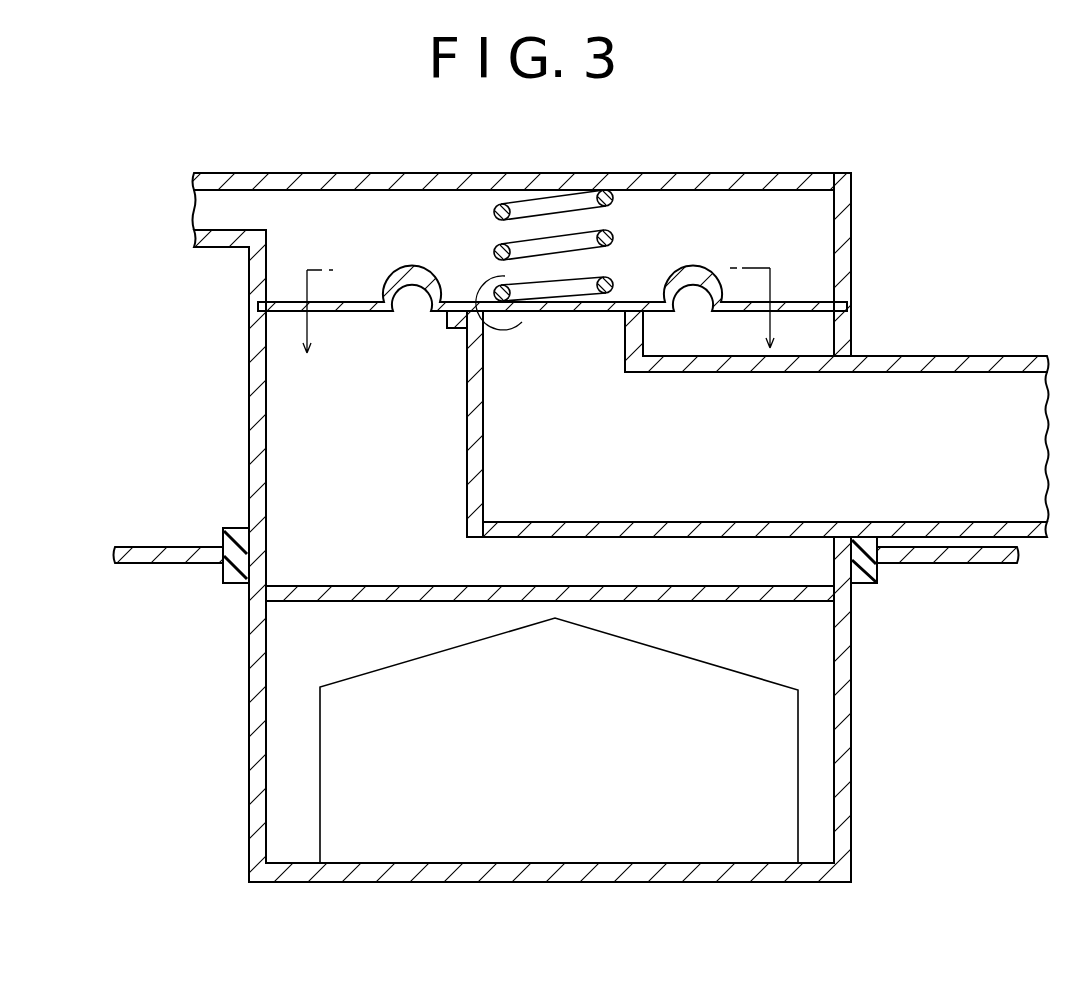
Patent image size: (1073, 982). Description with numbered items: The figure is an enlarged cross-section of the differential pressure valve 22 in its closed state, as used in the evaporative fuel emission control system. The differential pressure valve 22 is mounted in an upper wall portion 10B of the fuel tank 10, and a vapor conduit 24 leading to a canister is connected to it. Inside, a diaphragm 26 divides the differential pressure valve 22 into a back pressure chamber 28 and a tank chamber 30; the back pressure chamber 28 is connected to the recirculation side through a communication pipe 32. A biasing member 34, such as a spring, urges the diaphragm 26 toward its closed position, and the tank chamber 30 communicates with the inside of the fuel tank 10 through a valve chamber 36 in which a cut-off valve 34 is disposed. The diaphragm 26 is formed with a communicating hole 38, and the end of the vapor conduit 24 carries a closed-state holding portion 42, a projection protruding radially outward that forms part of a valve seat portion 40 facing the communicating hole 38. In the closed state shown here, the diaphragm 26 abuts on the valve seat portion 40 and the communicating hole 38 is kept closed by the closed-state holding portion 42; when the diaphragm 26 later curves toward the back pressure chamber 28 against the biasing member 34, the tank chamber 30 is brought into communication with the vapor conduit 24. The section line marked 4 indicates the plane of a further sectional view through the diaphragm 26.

The differential pressure valve 22 is at (906, 154).
The communication pipe 32 is at (211, 181).
The vapor conduit 24 is at (977, 346).
The diaphragm 26 is at (353, 294).
The back pressure chamber 28 is at (683, 259).
The tank chamber 30 is at (339, 449).
The biasing member 34 is at (493, 250).
The valve chamber 36 is at (750, 645).
The communicating hole 38 is at (462, 303).
The valve seat portion 40 is at (522, 322).
The closed-state holding portion 42 is at (447, 318).
The fuel tank 10 is at (152, 540).
The upper wall portion 10B is at (197, 547).
The section line 4- 4 is at (537, 313).